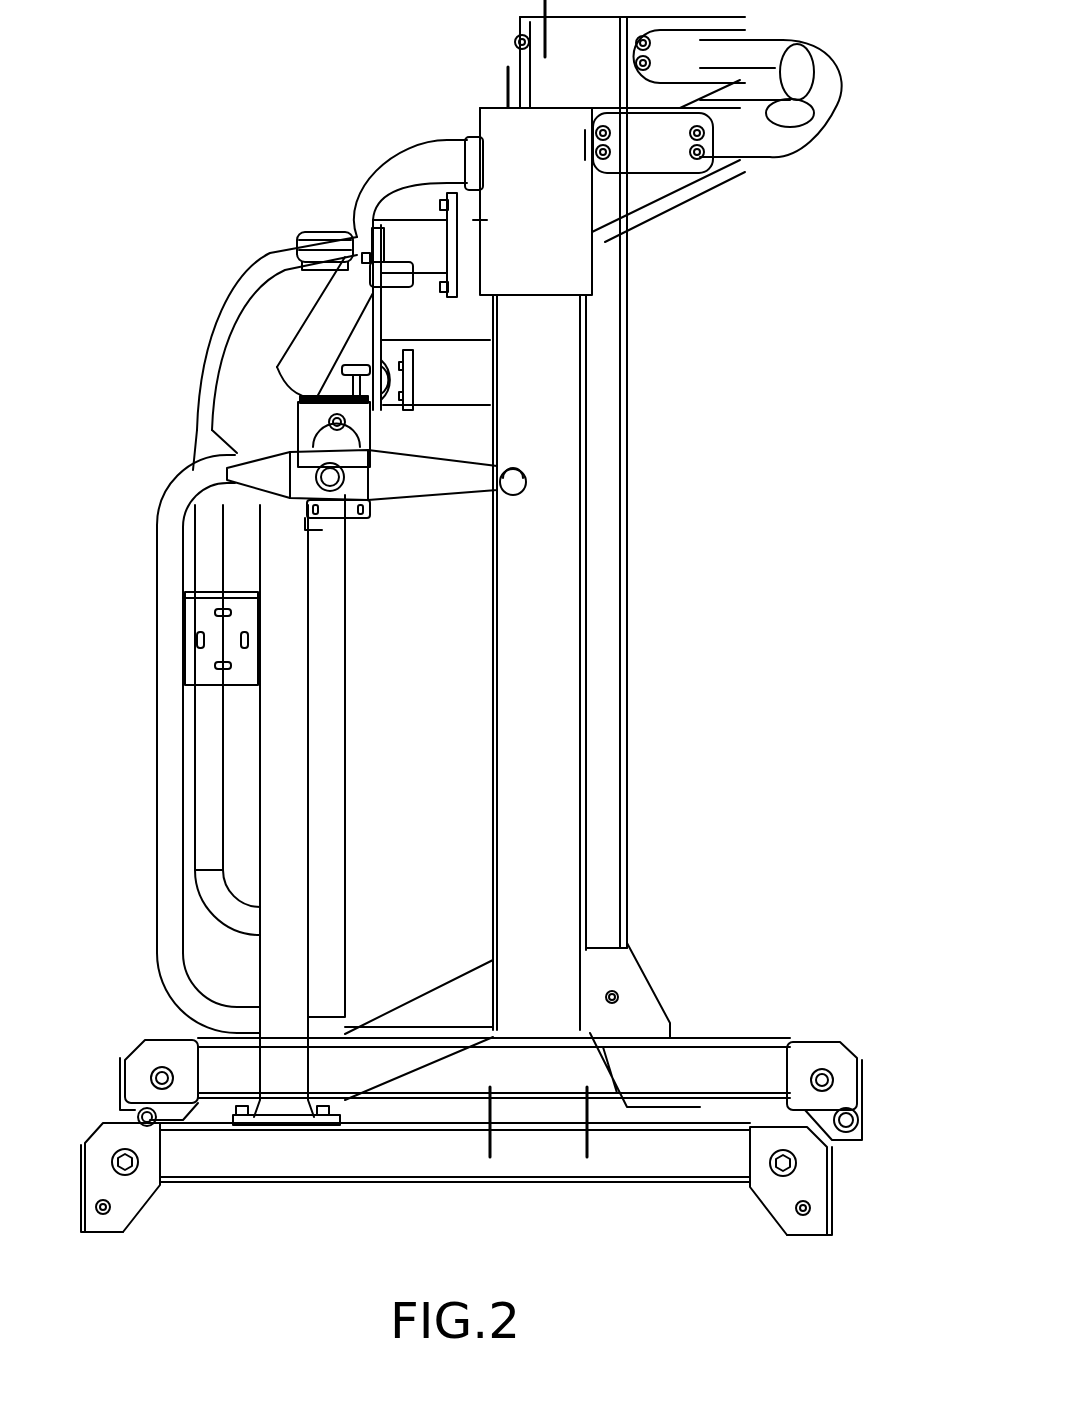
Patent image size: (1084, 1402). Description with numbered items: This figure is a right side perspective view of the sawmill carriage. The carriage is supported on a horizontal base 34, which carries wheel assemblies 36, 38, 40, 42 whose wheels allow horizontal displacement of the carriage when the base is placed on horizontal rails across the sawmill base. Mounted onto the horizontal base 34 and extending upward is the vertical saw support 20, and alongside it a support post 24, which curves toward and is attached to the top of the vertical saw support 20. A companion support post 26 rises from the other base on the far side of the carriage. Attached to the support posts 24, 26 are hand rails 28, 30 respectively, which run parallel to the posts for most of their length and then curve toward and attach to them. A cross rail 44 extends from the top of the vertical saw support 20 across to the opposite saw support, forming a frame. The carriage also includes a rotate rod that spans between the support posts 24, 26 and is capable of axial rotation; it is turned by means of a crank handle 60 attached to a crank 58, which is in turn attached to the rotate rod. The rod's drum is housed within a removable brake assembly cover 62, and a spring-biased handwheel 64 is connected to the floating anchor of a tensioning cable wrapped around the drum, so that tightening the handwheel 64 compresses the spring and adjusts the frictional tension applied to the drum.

The vertical saw support 20 is at (558, 718).
The support post 24 is at (288, 793).
The support post 26 is at (327, 662).
The hand rail 28 is at (170, 775).
The hand rail 30 is at (213, 728).
The horizontal base 34 is at (433, 1162).
The wheel assembly 36 is at (835, 1053).
The wheel assembly 38 is at (145, 1060).
The wheel assembly 40 is at (782, 1188).
The wheel assembly 42 is at (128, 1188).
The cross rail 44 is at (822, 88).
The crank 58 is at (412, 487).
The crank handle 60 is at (528, 480).
The brake assembly cover 62 is at (372, 420).
The handwheel 64 is at (340, 372).